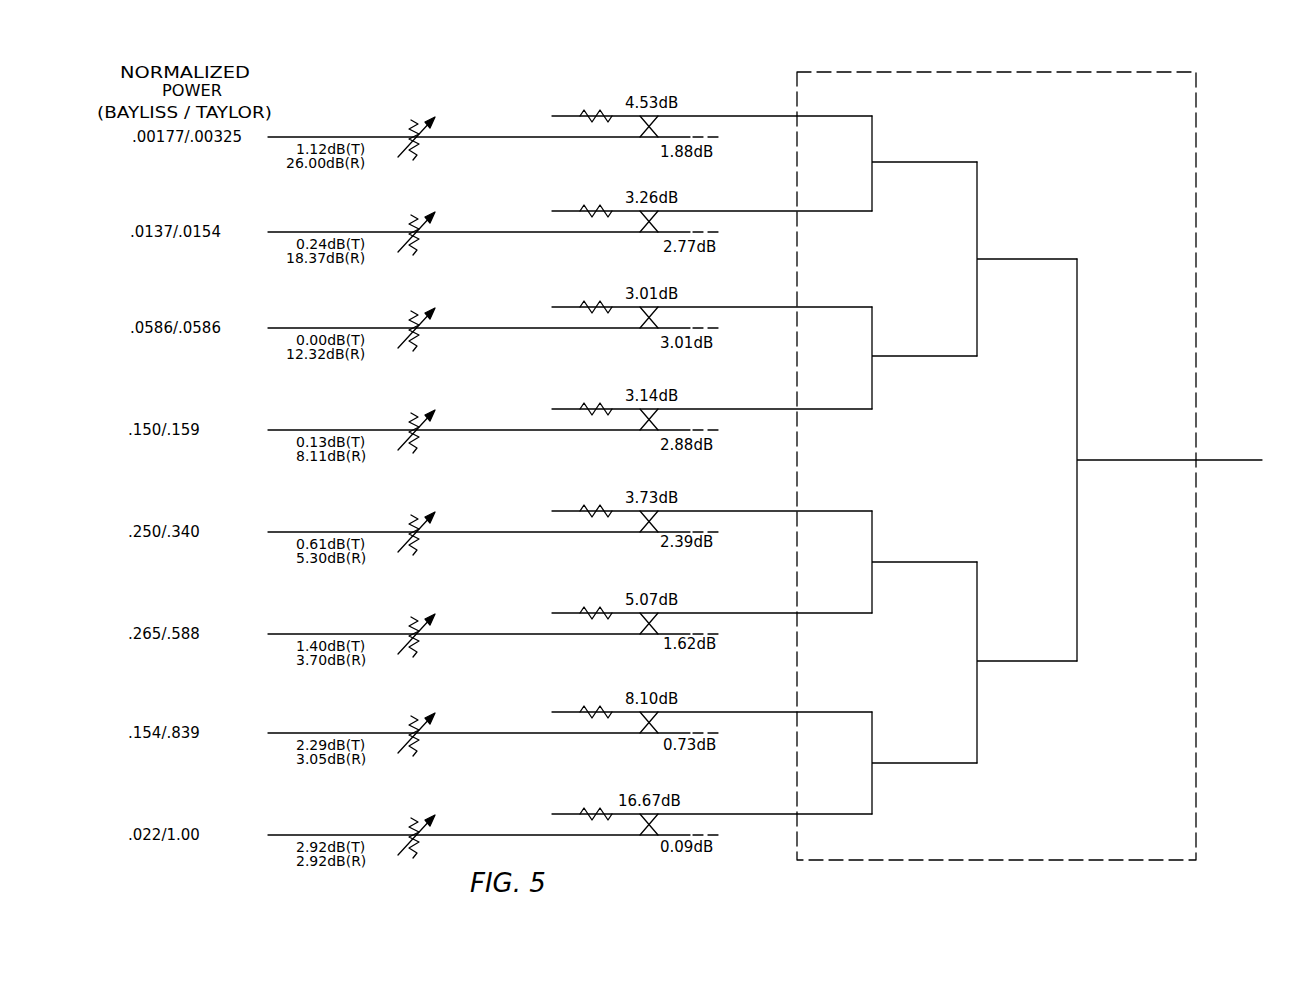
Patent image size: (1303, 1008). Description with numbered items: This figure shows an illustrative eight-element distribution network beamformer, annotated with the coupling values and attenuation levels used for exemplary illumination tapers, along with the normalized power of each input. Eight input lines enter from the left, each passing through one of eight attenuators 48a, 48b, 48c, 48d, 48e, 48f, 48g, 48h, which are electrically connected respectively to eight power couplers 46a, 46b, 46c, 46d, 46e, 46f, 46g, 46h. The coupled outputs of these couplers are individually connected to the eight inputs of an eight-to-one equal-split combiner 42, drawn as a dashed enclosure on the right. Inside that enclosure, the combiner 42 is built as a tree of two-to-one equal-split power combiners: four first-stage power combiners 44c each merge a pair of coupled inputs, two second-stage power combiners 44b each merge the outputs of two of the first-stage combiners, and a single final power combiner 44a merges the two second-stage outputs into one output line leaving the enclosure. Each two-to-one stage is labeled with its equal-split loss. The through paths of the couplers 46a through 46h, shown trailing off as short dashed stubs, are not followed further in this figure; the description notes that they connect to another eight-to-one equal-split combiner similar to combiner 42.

The 8:1 equal-split combiner 42 is at (1198, 103).
The 2:1 equal-split power combiner 44a is at (1079, 464).
The 2:1 equal-split power combiner 44b is at (979, 263).
The 2:1 equal-split power combiner 44c is at (874, 166).
The power coupler 46a is at (645, 124).
The power coupler 46b is at (645, 219).
The power coupler 46c is at (645, 315).
The power coupler 46d is at (645, 417).
The power coupler 46e is at (645, 519).
The power coupler 46f is at (645, 621).
The power coupler 46g is at (645, 720).
The power coupler 46h is at (645, 822).
The attenuator 48a is at (411, 122).
The attenuator 48b is at (411, 217).
The attenuator 48c is at (411, 313).
The attenuator 48d is at (411, 415).
The attenuator 48e is at (411, 517).
The attenuator 48f is at (411, 619).
The attenuator 48g is at (411, 718).
The attenuator 48h is at (411, 820).